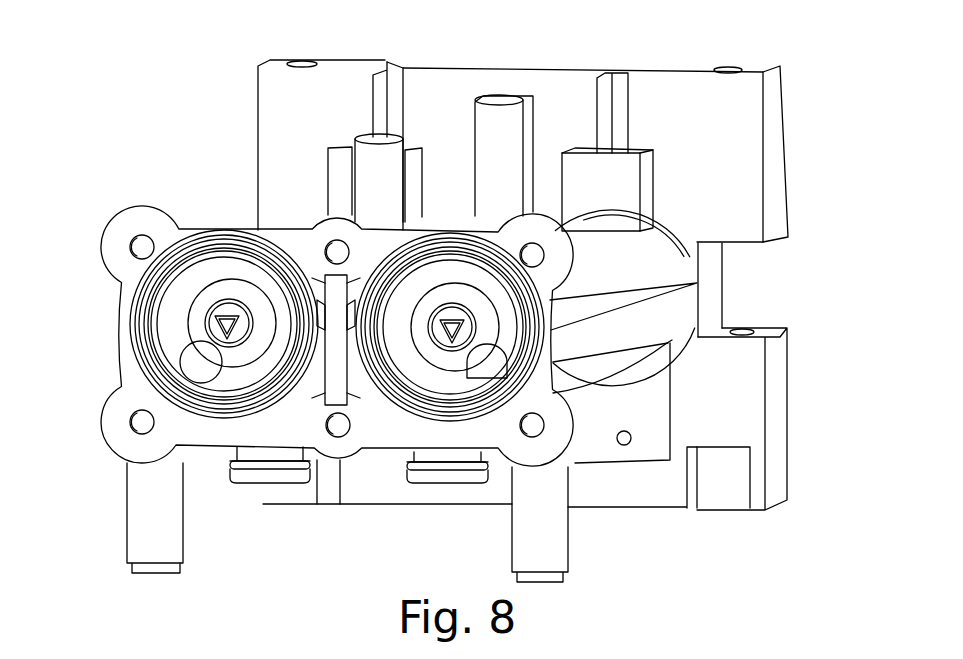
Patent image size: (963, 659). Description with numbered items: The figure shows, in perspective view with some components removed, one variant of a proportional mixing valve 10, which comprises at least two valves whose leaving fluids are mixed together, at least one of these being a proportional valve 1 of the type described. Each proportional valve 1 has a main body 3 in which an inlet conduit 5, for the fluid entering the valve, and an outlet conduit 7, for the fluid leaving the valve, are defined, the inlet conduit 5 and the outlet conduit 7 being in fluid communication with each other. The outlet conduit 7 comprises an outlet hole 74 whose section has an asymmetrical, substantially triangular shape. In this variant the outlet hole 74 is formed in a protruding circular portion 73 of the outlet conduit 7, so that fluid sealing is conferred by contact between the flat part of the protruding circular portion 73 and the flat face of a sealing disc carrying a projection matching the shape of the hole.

The proportional mixing valve 10 is at (140, 61).
The main body 3 is at (690, 210).
The proportional valve 1 is at (68, 316).
The inlet conduit 5 is at (201, 364).
The outlet conduit 7 is at (333, 177).
The outlet hole 74 is at (222, 316).
The protruding circular portion 73 is at (243, 335).